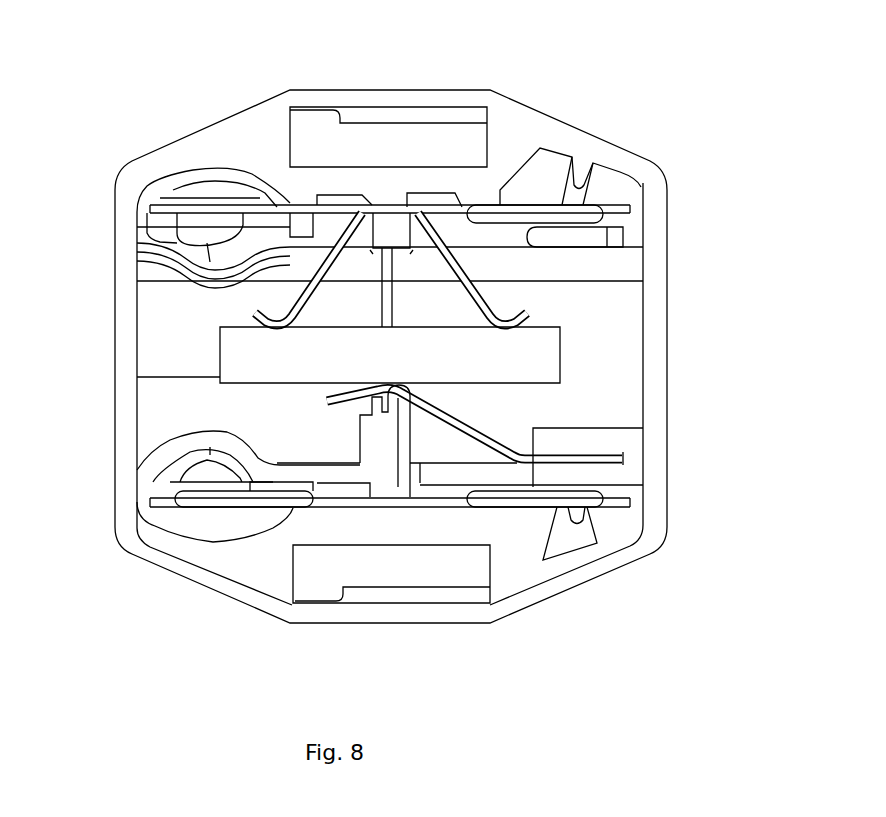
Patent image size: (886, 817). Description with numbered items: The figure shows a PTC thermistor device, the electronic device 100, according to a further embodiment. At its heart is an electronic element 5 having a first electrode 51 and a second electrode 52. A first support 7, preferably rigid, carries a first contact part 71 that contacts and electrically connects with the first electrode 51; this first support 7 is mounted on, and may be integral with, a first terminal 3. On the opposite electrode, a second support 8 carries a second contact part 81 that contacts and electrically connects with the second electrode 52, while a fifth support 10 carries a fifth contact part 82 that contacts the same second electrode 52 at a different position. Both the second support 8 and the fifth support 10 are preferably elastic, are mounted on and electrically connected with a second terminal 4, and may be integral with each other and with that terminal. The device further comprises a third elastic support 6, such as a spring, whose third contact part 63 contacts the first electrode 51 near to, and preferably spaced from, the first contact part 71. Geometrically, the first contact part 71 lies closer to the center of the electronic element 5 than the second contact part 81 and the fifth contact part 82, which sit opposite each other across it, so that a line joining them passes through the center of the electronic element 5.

The electronic device 100 is at (402, 90).
The second terminal 4 is at (193, 170).
The second support 8 is at (310, 295).
The fifth support 10 is at (473, 297).
The second electrode 52 is at (240, 327).
The second contact part 81 is at (263, 360).
The fifth contact part 82 is at (567, 340).
The electronic element 5 is at (220, 375).
The third contact part 63 is at (392, 386).
The first electrode 51 is at (287, 383).
The third elastic support 6 is at (520, 457).
The first contact part 71 is at (368, 412).
The first terminal 3 is at (345, 502).
The first support 7 is at (405, 442).